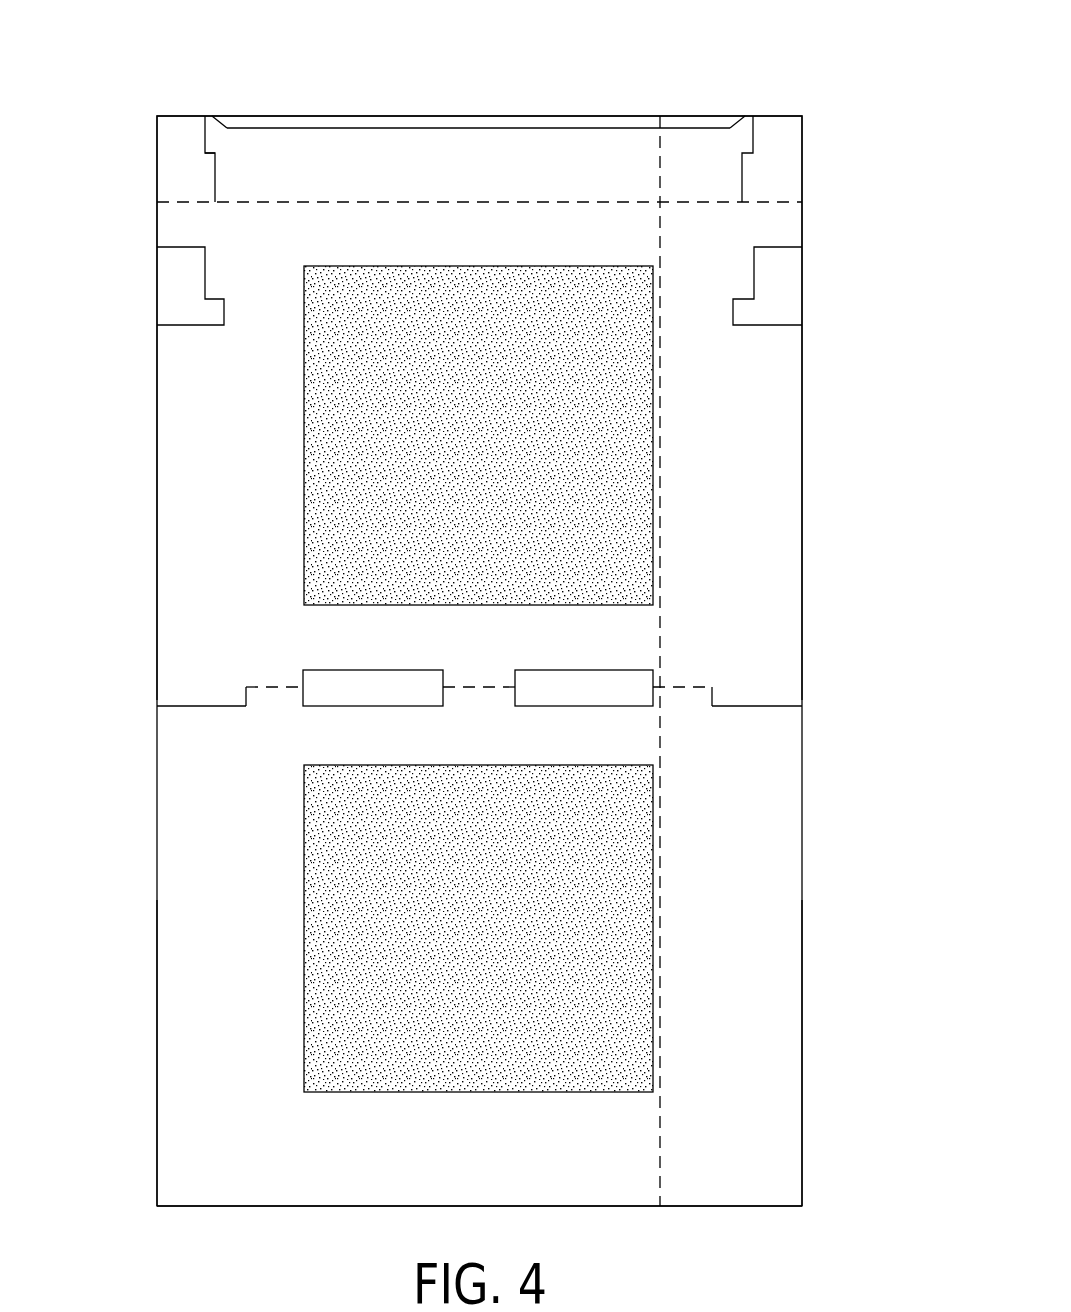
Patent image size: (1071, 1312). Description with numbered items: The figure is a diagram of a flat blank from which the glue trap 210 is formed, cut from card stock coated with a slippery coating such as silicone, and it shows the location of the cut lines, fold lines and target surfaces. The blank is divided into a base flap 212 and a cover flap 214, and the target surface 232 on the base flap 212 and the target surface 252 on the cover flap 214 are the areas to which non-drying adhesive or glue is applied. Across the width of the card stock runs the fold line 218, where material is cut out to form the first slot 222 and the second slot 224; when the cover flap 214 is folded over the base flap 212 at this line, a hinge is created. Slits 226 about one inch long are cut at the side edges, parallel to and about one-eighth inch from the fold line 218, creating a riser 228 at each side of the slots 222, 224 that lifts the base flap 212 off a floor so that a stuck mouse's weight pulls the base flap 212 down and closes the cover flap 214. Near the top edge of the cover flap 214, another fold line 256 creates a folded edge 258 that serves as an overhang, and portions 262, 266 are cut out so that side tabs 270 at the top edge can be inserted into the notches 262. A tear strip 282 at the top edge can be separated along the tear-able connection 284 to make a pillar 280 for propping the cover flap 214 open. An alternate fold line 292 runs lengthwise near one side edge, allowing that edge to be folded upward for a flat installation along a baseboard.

The glue trap 210 is at (832, 74).
The base flap 212 is at (200, 1105).
The cover flap 214 is at (170, 480).
The fold line 218 is at (683, 687).
The first slot 222 is at (327, 673).
The second slot 224 is at (588, 680).
The slits 226 is at (182, 705).
The riser 228 is at (220, 698).
The target surface 232 is at (342, 952).
The target surface 252 is at (330, 408).
The fold line 256 is at (723, 202).
The folded edge 258 is at (220, 162).
The notches 262 is at (168, 285).
The portions to be cut out 266 is at (170, 177).
The side tabs 270 is at (213, 130).
The pillar 280 is at (323, 123).
The tear strip 282 is at (634, 116).
The tear-able connection 284 is at (483, 128).
The alternate fold line 292 is at (662, 437).